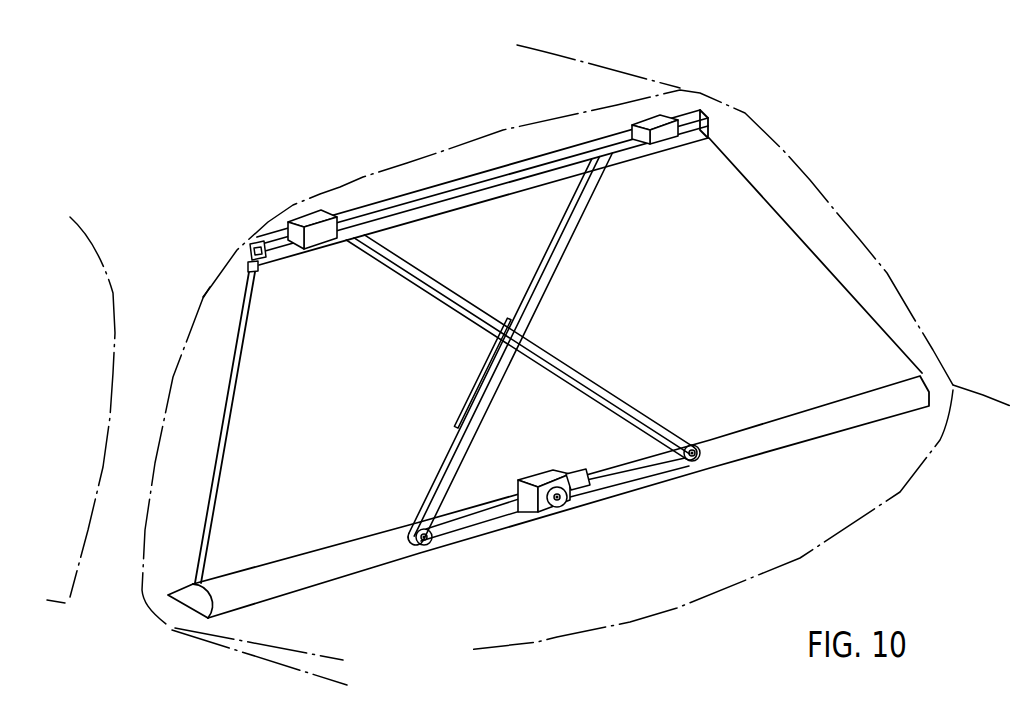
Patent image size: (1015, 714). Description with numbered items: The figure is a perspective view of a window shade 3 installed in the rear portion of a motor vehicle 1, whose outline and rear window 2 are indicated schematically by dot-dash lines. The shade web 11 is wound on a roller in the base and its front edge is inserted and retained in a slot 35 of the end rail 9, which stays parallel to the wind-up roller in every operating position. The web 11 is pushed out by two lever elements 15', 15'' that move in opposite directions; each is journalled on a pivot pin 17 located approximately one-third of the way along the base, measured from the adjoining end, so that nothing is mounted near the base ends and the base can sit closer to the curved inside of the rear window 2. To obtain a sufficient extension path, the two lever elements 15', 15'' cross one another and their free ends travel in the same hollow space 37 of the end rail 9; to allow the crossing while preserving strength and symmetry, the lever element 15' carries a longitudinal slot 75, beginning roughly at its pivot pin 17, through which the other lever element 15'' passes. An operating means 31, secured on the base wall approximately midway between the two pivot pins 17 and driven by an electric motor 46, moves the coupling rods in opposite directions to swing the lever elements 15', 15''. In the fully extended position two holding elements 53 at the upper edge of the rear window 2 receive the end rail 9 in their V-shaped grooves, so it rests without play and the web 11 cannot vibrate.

The motor vehicle 1 is at (607, 63).
The rear window 2 is at (810, 177).
The window shade 3 is at (848, 260).
The end rail 9 is at (472, 183).
The shade web 11 is at (314, 387).
The lever element 15' is at (514, 349).
The lever element 15'' is at (521, 347).
The pivot pin 17 is at (694, 442).
The operating means 31 is at (539, 458).
The slot 35 is at (247, 267).
The hollow space 37 is at (252, 246).
The electric motor 46 is at (580, 472).
The holding element 53 is at (311, 219).
The longitudinal slot 75 is at (478, 402).